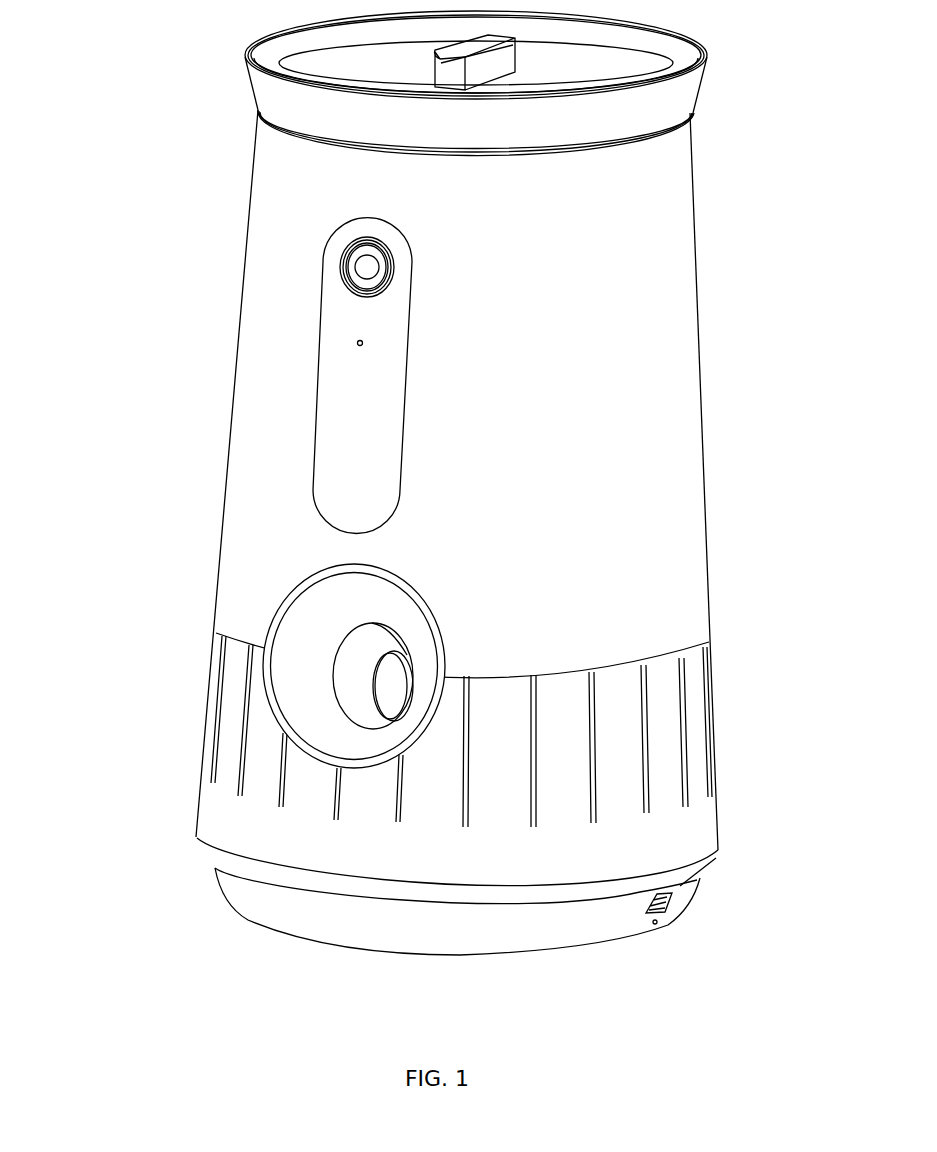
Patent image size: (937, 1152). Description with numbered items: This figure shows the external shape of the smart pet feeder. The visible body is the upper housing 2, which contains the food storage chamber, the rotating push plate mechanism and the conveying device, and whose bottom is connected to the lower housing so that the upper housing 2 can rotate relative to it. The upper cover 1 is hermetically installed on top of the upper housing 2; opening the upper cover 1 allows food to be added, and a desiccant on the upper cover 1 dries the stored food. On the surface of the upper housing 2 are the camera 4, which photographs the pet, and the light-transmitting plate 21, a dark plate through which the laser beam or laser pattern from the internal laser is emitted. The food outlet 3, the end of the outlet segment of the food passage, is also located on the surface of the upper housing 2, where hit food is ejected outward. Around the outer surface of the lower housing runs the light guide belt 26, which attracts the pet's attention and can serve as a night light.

The upper cover 1 is at (270, 49).
The upper housing 2 is at (716, 428).
The light-transmitting plate 21 is at (330, 490).
The camera 4 is at (332, 265).
The food outlet 3 is at (310, 673).
The light guide belt 26 is at (320, 882).